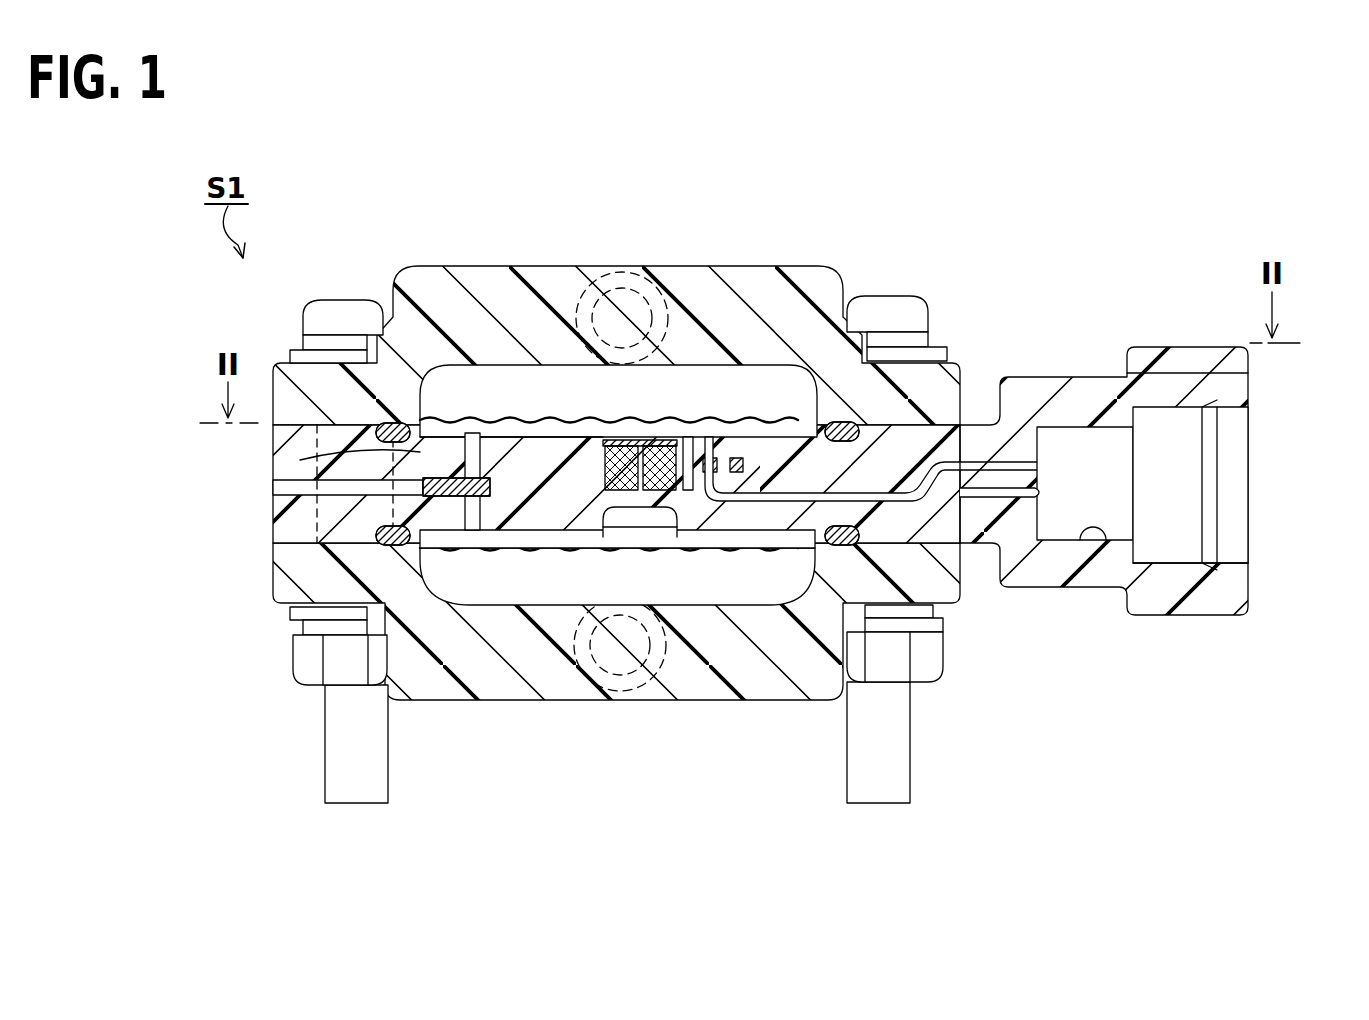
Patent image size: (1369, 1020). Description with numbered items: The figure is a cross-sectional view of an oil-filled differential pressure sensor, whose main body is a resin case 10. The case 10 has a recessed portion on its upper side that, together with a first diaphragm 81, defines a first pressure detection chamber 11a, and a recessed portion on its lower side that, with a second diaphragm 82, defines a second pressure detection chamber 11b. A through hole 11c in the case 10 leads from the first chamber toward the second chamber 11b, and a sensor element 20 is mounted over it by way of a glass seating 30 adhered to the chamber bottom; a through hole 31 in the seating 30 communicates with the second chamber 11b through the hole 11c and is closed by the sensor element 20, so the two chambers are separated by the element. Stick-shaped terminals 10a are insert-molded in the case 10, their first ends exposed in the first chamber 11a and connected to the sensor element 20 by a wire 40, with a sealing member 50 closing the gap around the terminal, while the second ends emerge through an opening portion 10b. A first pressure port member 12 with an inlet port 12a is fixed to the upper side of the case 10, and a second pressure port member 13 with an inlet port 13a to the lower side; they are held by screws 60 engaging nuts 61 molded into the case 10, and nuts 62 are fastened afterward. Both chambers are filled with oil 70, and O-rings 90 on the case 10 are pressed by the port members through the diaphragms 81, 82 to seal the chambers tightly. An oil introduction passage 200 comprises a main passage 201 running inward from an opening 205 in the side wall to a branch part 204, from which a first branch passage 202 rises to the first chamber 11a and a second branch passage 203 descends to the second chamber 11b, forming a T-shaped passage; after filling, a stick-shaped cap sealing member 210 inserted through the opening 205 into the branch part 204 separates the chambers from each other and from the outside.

The case 10 is at (1145, 469).
The terminal 10a is at (1150, 463).
The opening portion 10b is at (1093, 542).
The first pressure detection chamber 11a is at (472, 433).
The second pressure detection chamber 11b is at (548, 560).
The through hole 11c is at (718, 565).
The first pressure port member 12 is at (575, 278).
The inlet port 12a is at (620, 288).
The second pressure port member 13 is at (708, 680).
The inlet port 13a is at (648, 690).
The sensor element 20 is at (722, 437).
The seating 30 is at (640, 448).
The through hole 31 is at (662, 440).
The wire 40 is at (690, 445).
The sealing member 50 is at (740, 440).
The screw 60 is at (345, 300).
The nut 61 is at (955, 390).
The nut 62 is at (303, 667).
The oil 70 is at (512, 400).
The first diaphragm 81 is at (572, 437).
The second diaphragm 82 is at (480, 560).
The O-ring 90 is at (850, 425).
The oil introduction passage 200 is at (317, 492).
The main passage 201 is at (330, 465).
The first branch passage 202 is at (392, 335).
The second branch passage 203 is at (415, 700).
The branch part 204 is at (417, 700).
The opening 205 is at (276, 490).
The sealing member 210 is at (300, 460).